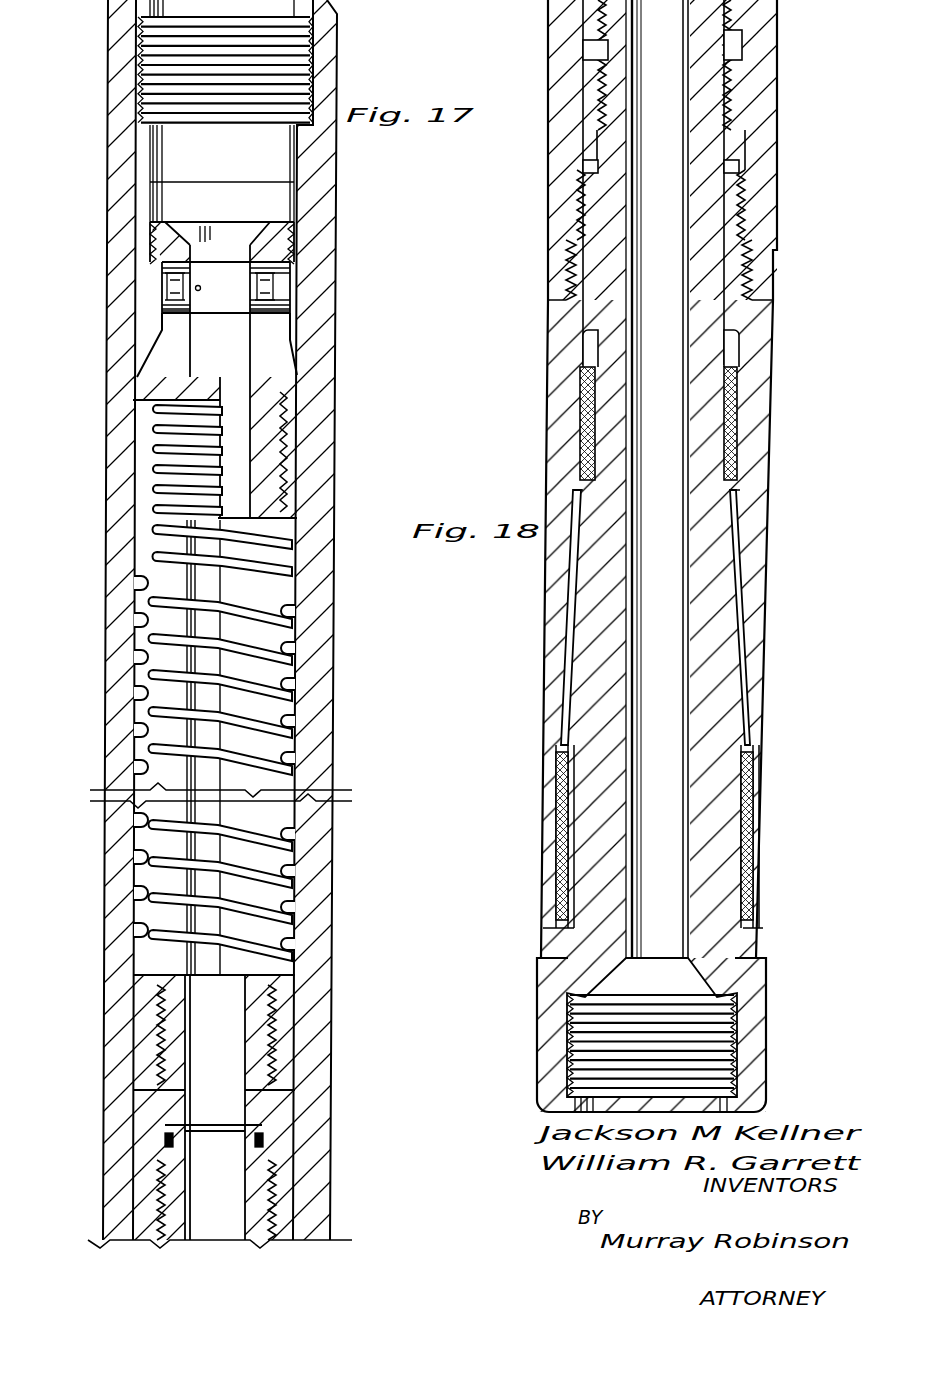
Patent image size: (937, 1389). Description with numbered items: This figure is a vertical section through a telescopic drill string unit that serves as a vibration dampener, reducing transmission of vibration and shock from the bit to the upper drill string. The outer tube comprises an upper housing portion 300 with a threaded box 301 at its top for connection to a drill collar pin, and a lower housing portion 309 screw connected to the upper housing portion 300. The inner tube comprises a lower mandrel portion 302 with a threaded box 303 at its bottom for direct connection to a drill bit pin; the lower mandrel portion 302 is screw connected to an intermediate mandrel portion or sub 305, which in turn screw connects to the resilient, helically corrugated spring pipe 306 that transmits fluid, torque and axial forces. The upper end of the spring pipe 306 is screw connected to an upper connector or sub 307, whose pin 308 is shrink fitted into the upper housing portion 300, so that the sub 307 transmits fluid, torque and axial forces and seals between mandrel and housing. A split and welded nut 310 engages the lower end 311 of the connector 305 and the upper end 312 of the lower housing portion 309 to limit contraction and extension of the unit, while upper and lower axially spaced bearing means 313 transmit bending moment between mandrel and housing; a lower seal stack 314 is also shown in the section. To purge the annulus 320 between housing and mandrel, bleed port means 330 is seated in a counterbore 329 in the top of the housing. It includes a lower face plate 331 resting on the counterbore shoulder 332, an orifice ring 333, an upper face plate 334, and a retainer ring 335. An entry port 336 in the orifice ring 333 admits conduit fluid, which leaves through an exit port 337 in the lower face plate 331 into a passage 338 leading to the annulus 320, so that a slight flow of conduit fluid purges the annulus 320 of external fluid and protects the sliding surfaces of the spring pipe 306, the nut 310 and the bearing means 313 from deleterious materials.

In FIG. 17, the upper housing portion 300 is at (318, 233).
In FIG. 17, the threaded box 301 is at (325, 45).
In FIG. 18, the lower mandrel portion 302 is at (722, 652).
In FIG. 18, the threaded box 303 is at (764, 1018).
In FIG. 17, the intermediate mandrel portion or sub 305 is at (270, 1113).
In FIG. 17, the spring pipe 306 is at (268, 862).
In FIG. 17, the upper connector or sub 307 is at (268, 382).
In FIG. 17, the pin 308 is at (292, 334).
In FIG. 18, the lower housing portion 309 is at (758, 603).
In FIG. 18, the split and welded nut 310 is at (742, 118).
In FIG. 18, the lower end of connector 311 is at (742, 52).
In FIG. 18, the upper end of lower housing portion 312 is at (738, 186).
In FIG. 18, the bearing means 313 is at (737, 433).
In FIG. 18, the lower seal packing 314 is at (754, 832).
In FIG. 17, the annulus 320 is at (290, 717).
In FIG. 17, the counterbore 329 is at (163, 290).
In FIG. 17, the bleed port means 330 is at (291, 280).
In FIG. 17, the lower face plate 331 is at (292, 304).
In FIG. 17, the counterbore shoulder 332 is at (292, 314).
In FIG. 17, the orifice ring 333 is at (292, 293).
In FIG. 17, the upper face plate 334 is at (160, 266).
In FIG. 17, the retainer ring 335 is at (170, 226).
In FIG. 17, the entry port 336 is at (201, 289).
In FIG. 17, the exit port 337 is at (160, 304).
In FIG. 17, the passage 338 is at (165, 318).